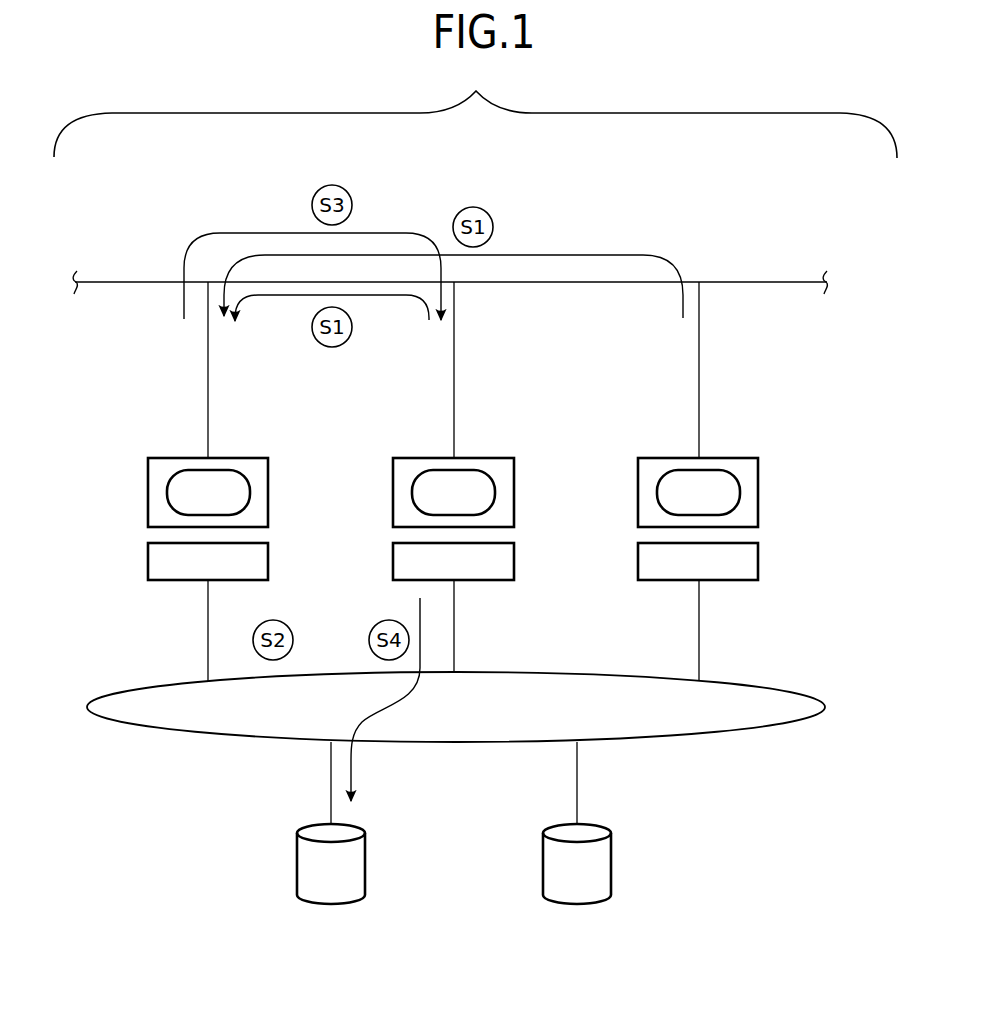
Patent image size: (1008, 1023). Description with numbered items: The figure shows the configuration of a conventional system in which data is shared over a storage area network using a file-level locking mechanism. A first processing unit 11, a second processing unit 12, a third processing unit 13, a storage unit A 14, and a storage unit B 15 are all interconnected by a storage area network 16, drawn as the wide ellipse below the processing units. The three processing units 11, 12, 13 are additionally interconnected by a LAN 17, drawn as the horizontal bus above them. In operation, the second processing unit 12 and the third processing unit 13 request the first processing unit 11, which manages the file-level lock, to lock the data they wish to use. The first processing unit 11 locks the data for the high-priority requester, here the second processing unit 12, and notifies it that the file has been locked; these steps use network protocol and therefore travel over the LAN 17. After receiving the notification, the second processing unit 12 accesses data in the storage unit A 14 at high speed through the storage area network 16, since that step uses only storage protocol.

The processing unit (1) 11 is at (243, 458).
The processing unit (2) 12 is at (490, 458).
The processing unit (3) 13 is at (737, 458).
The storage unit (A) 14 is at (329, 910).
The storage unit (B) 15 is at (579, 910).
The storage area network 16 is at (734, 736).
The LAN 17 is at (735, 282).